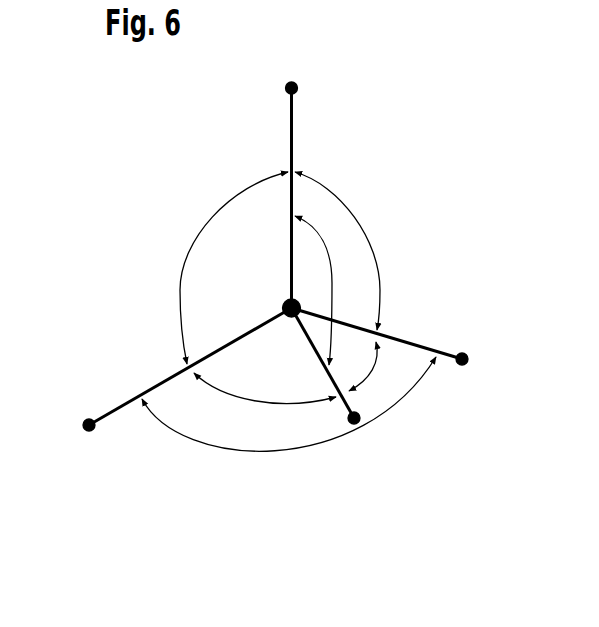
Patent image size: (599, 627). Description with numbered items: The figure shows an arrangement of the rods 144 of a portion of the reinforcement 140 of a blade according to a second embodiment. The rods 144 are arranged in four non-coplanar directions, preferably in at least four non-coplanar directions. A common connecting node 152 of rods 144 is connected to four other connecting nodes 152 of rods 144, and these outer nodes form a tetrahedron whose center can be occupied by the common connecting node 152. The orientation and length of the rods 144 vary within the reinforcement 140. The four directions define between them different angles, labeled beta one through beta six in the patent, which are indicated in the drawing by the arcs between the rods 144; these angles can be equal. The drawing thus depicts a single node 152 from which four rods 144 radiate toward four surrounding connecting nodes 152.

The reinforcement 140 is at (108, 144).
The rods 144 is at (294, 137).
The connecting node 152 is at (285, 89).